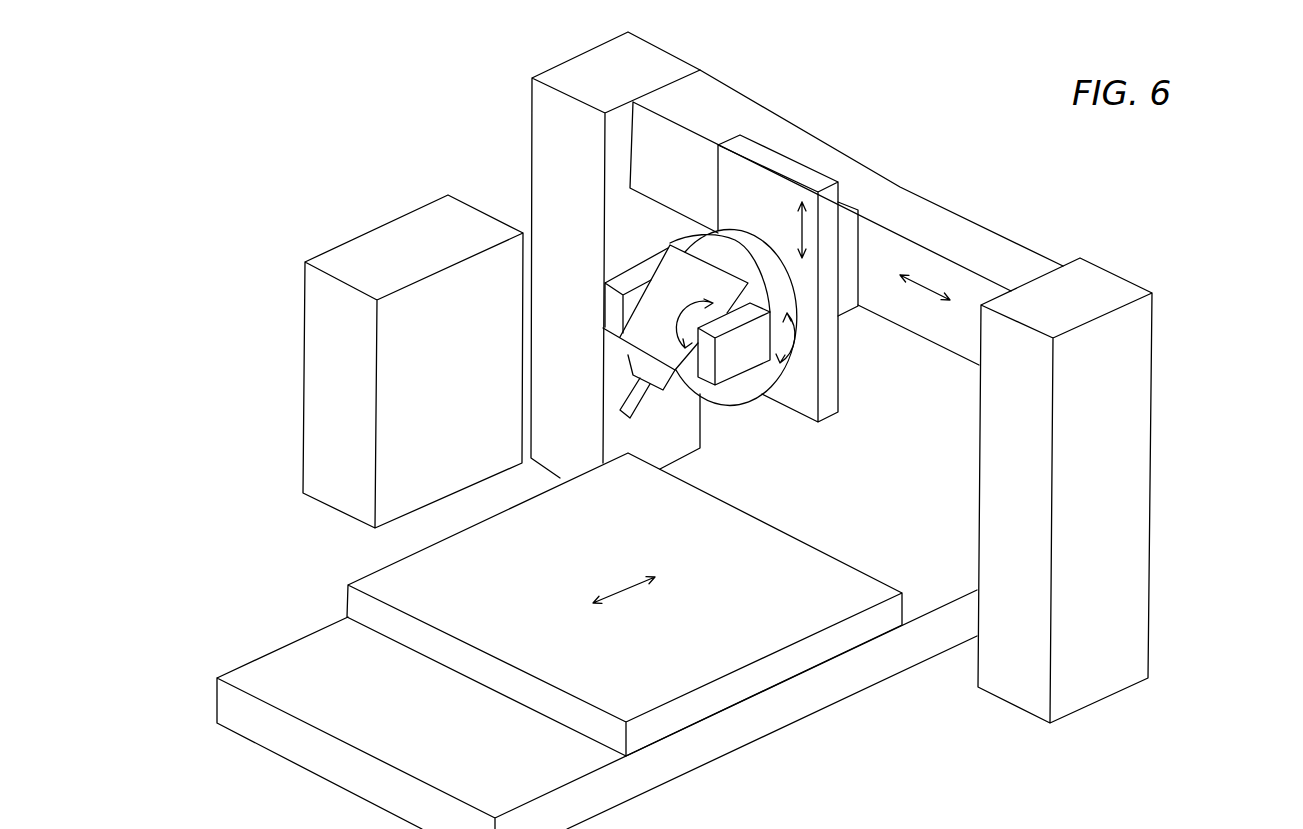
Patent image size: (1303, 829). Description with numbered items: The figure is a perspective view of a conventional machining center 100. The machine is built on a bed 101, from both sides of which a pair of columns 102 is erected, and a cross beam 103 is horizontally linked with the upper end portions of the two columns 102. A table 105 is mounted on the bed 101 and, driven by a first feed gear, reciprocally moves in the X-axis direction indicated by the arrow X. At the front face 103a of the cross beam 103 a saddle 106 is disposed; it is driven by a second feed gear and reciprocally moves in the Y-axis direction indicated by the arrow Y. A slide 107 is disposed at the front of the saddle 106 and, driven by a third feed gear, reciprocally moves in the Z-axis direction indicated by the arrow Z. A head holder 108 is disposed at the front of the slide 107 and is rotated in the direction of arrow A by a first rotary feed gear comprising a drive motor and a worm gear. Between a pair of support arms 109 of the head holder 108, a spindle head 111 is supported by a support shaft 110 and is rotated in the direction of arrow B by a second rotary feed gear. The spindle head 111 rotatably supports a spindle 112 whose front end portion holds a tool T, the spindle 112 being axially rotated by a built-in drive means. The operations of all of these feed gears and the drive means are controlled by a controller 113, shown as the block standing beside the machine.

The machining center 100 is at (322, 171).
The bed 101 is at (293, 647).
The column 102 is at (530, 142).
The cross beam 103 is at (1022, 263).
The front face of the cross beam 103a is at (927, 263).
The table 105 is at (792, 668).
The saddle 106 is at (850, 232).
The slide 107 is at (765, 152).
The head holder 108 is at (770, 380).
The support arms 109 is at (598, 307).
The support shaft 110 is at (720, 312).
The spindle head 111 is at (638, 325).
The spindle 112 is at (627, 367).
The tool T is at (620, 405).
The controller 113 is at (320, 347).